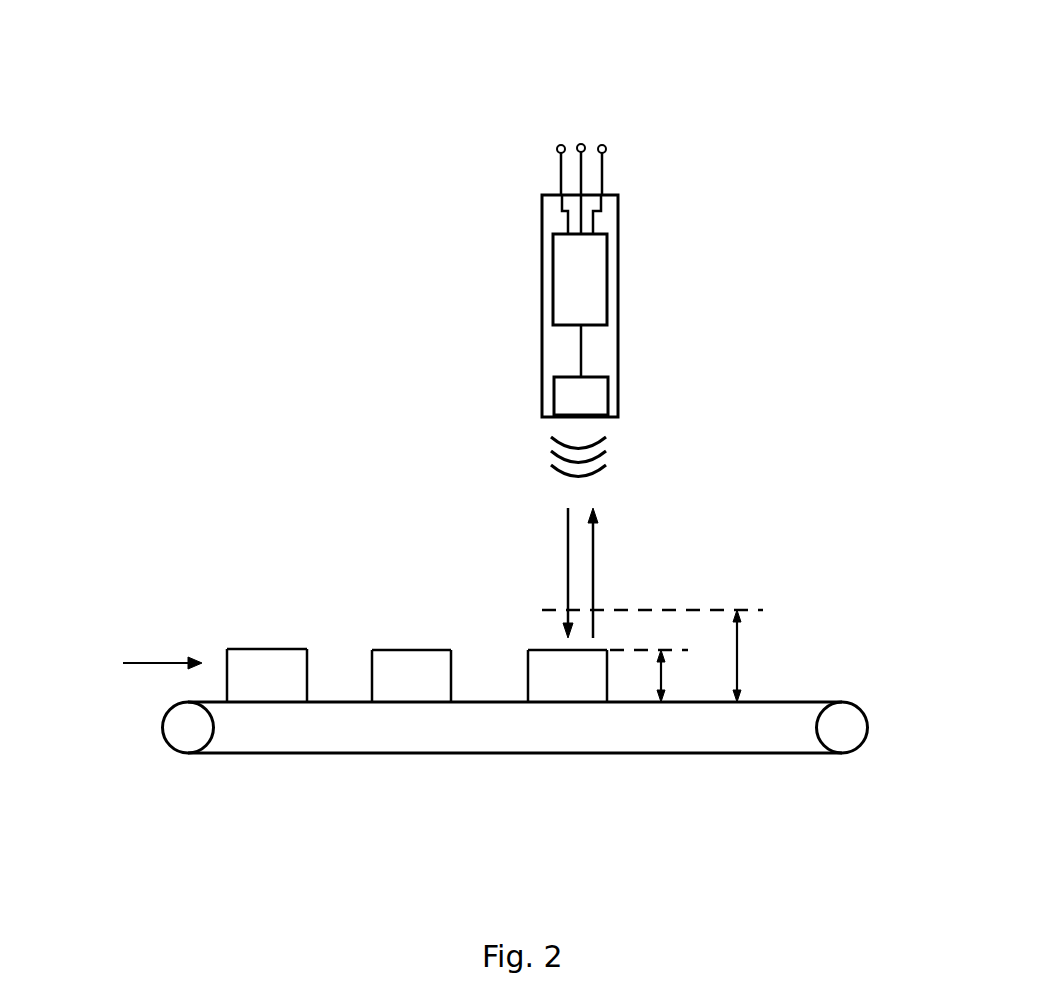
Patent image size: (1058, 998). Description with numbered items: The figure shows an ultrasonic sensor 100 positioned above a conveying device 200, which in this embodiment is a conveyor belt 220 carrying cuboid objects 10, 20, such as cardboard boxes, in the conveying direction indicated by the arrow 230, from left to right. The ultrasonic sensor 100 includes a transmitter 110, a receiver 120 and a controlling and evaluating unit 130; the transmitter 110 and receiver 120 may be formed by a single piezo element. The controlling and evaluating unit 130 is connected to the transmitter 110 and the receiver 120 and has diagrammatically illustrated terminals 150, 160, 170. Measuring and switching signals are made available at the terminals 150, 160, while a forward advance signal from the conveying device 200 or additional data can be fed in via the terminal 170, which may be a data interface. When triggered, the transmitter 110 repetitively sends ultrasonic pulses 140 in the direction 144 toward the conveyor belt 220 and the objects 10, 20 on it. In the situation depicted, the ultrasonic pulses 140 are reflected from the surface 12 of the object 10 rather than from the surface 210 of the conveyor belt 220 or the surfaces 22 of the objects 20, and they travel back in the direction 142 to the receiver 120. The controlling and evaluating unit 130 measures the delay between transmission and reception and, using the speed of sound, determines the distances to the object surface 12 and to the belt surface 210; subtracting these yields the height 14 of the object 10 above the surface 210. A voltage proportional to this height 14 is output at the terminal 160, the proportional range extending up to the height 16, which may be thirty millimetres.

The ultrasonic sensor 100 is at (610, 215).
The transmitter 110 is at (560, 390).
The receiver 120 is at (600, 398).
The controlling and evaluating unit 130 is at (598, 307).
The ultrasonic pulses 140 is at (602, 437).
The direction of reflected pulses 142 is at (593, 538).
The transmission direction 144 is at (568, 540).
The terminal 150 is at (558, 145).
The terminal 160 is at (583, 144).
The terminal 170 is at (606, 145).
The object 10 is at (547, 680).
The object surface 12 is at (542, 650).
The height 14 is at (660, 683).
The height 16 is at (740, 663).
The objects 20 is at (253, 667).
The object surfaces 22 is at (285, 649).
The conveying device 200 is at (701, 737).
The surface of the conveyor belt 210 is at (813, 702).
The conveyor belt 220 is at (327, 730).
The arrow 230 is at (130, 663).